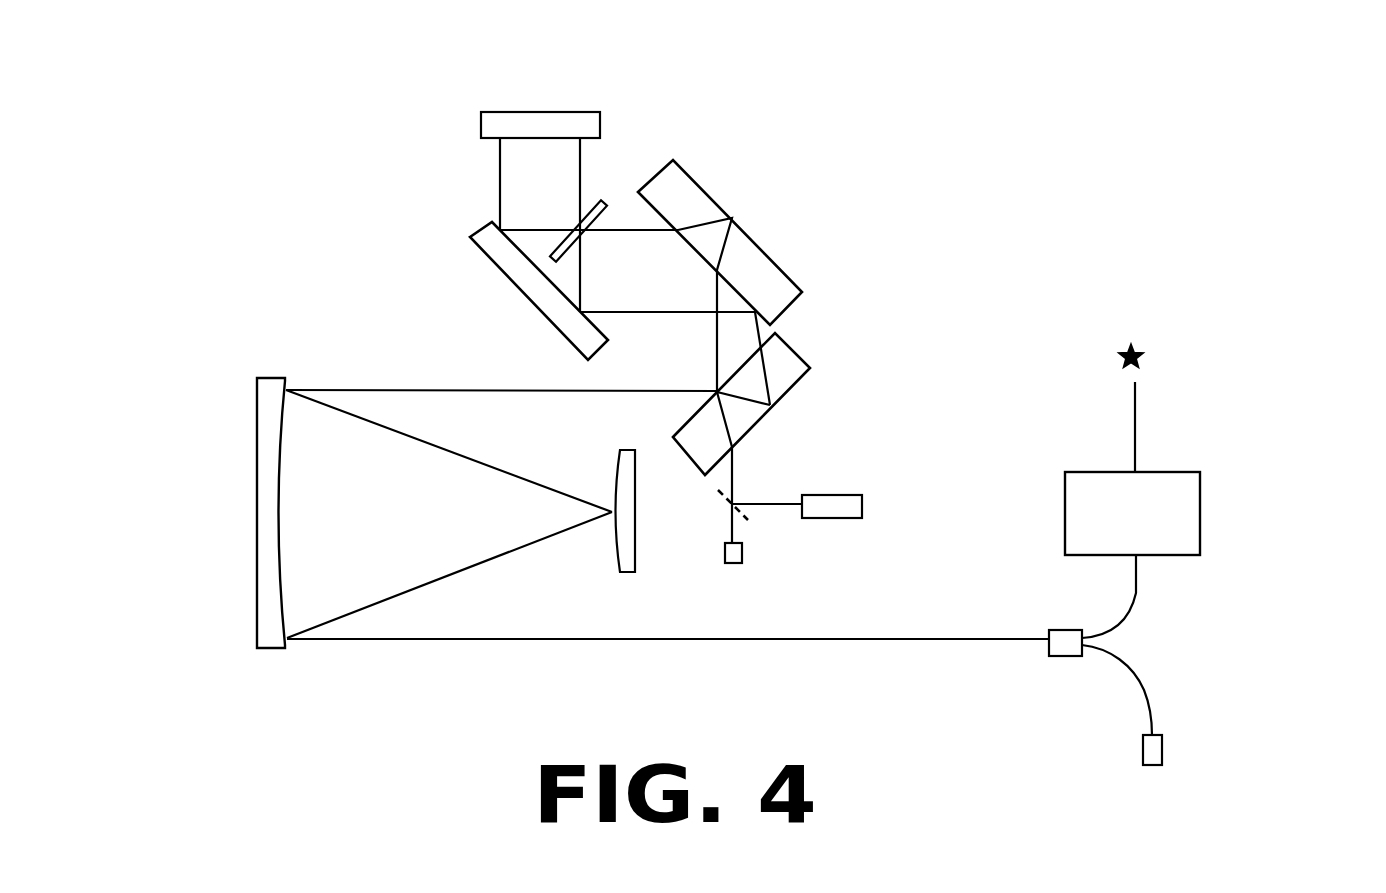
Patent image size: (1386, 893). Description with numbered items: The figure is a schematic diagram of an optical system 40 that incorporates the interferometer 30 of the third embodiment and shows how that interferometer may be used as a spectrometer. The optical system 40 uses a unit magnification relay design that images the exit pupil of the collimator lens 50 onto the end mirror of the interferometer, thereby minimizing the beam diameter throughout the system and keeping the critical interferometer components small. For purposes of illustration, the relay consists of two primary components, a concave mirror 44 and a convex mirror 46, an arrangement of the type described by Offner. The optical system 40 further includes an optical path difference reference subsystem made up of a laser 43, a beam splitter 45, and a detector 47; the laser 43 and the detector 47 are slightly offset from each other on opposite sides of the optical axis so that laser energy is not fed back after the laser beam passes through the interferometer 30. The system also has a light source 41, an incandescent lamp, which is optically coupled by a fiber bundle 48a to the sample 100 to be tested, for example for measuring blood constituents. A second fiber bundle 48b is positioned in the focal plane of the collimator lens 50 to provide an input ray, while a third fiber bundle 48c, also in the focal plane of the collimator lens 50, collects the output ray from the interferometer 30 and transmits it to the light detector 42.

The interferometer 30 is at (593, 100).
The optical system 40 is at (1062, 145).
The light source 41 is at (1162, 340).
The light detector 42 is at (1180, 750).
The laser 43 is at (846, 482).
The concave mirror 44 is at (243, 526).
The beam splitter 45 is at (763, 533).
The convex mirror 46 is at (657, 528).
The detector 47 is at (744, 578).
The fiber bundle 48a is at (1152, 407).
The fiber bundle 48b is at (1154, 597).
The fiber bundle 48c is at (1151, 663).
The collimator lens 50 is at (1071, 674).
The sample 100 is at (1217, 515).